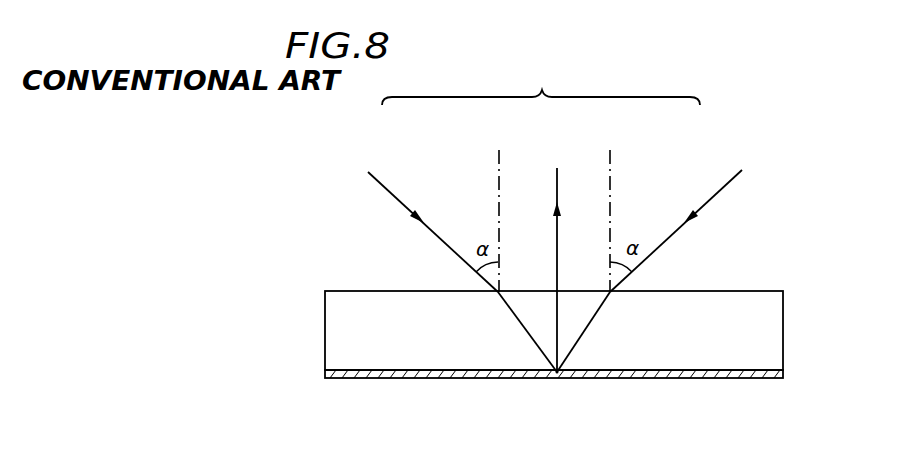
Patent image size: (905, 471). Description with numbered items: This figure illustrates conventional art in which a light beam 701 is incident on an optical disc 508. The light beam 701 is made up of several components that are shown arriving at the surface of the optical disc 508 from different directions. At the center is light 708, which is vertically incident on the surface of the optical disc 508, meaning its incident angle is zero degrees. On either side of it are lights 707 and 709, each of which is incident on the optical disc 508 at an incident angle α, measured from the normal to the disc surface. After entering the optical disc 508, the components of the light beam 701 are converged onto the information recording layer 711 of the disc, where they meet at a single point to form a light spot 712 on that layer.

The light beam 701 is at (541, 81).
The light incident at incident angle α 707 is at (390, 192).
The light vertically incident 708 is at (557, 183).
The light incident at incident angle α 709 is at (723, 187).
The optical disc 508 is at (775, 323).
The information recording layer 711 is at (492, 376).
The light spot 712 is at (557, 372).